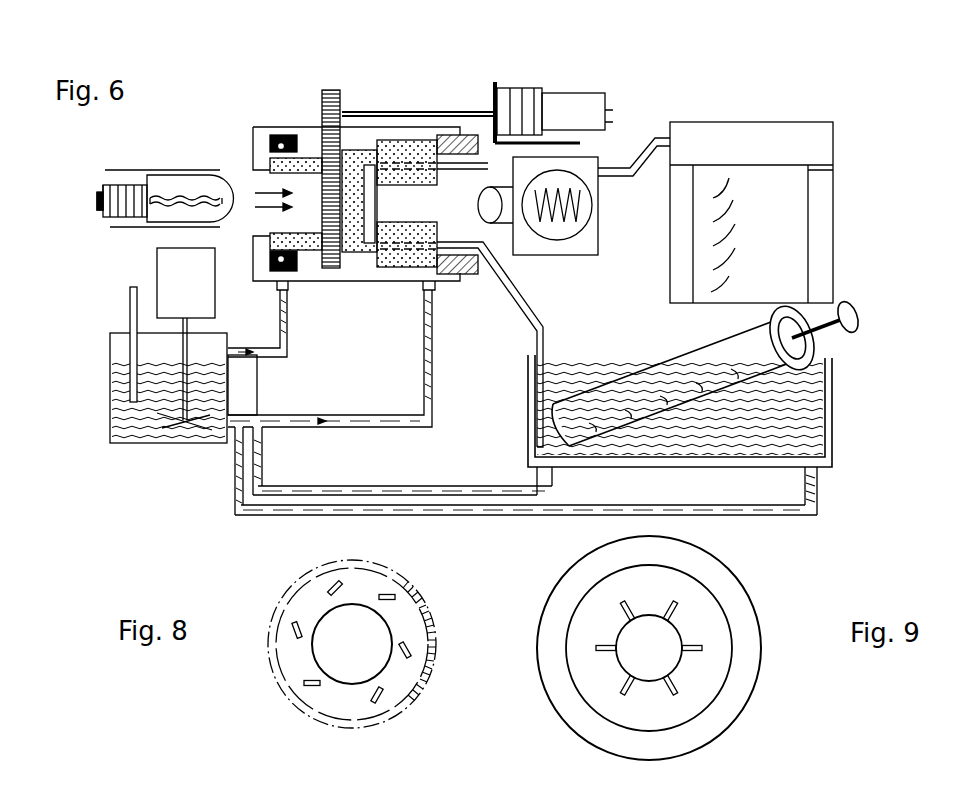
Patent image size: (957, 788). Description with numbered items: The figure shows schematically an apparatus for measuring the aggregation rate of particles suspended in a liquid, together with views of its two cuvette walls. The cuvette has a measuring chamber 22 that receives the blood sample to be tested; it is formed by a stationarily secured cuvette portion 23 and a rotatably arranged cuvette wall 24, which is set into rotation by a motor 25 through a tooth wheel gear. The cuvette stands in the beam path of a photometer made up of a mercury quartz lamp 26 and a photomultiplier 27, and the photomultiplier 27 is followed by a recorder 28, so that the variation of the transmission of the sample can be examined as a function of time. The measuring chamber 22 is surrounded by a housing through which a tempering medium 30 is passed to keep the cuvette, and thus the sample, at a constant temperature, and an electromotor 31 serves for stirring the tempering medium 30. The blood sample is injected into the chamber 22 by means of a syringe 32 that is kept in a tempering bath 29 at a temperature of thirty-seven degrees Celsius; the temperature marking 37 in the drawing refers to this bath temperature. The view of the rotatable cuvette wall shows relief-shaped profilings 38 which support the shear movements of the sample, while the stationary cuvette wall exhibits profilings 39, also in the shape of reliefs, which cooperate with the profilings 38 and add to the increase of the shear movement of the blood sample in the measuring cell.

In FIG. 6, the measuring chamber 22 is at (375, 175).
In FIG. 6, the stationarily secured cuvette portion 23 is at (420, 148).
In FIG. 6, the rotatably arranged cuvette wall 24 is at (356, 158).
In FIG. 6, the motor 25 is at (613, 110).
In FIG. 6, the mercury quartz lamp 26 is at (178, 207).
In FIG. 6, the photomultiplier 27 is at (570, 178).
In FIG. 6, the recorder 28 is at (797, 180).
In FIG. 6, the tempering bath 29 is at (833, 377).
In FIG. 6, the tempering medium 30 is at (130, 405).
In FIG. 6, the electromotor 31 is at (172, 278).
In FIG. 6, the syringe 32 is at (833, 412).
In FIG. 6, the temperature indication 37 degrees 37 is at (790, 408).
In FIG. 8, the profilings 38 is at (407, 682).
In FIG. 9, the profilings 39 is at (622, 690).